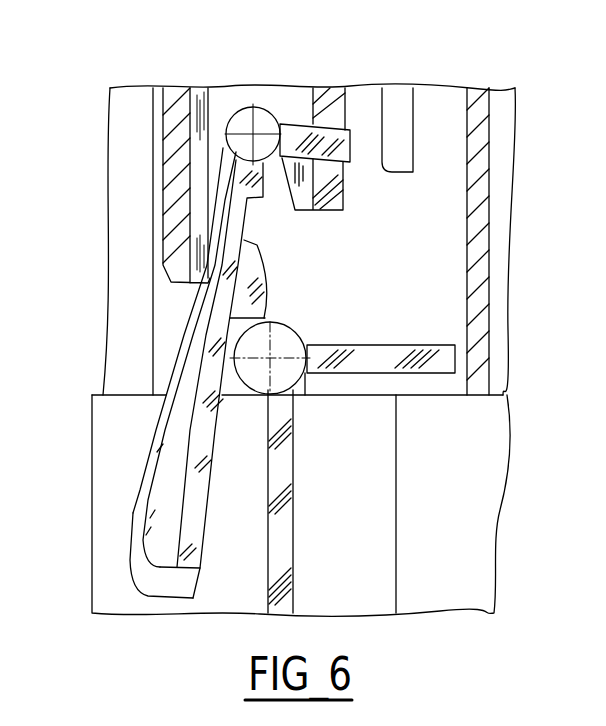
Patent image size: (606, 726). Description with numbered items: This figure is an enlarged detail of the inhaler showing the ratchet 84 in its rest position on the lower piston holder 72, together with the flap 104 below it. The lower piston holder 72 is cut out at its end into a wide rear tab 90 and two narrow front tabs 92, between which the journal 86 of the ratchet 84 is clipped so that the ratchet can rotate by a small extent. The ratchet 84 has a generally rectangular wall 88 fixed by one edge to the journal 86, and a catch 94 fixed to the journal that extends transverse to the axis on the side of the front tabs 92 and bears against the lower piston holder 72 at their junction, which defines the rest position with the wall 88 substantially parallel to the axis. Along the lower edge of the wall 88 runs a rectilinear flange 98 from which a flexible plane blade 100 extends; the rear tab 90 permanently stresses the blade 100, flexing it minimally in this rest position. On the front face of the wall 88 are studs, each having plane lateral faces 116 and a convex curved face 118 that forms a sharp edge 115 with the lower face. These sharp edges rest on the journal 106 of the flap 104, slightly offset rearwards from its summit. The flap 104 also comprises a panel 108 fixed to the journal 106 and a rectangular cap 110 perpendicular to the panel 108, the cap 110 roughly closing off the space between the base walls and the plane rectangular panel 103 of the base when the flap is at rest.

The lower piston holder 72 is at (213, 112).
The ratchet 84 is at (138, 497).
The journal 86 is at (272, 113).
The wall 88 is at (180, 546).
The rear tab 90 is at (178, 262).
The front tabs 92 is at (336, 194).
The catch 94 is at (353, 137).
The flange 98 is at (146, 578).
The blade 100 is at (180, 351).
The panel 103 is at (480, 237).
The flap 104 is at (290, 541).
The journal 106 is at (282, 377).
The panel 108 is at (280, 603).
The cap 110 is at (440, 346).
The sharp edge 115 is at (266, 317).
The lateral faces 116 is at (258, 267).
The curved face 118 is at (266, 289).